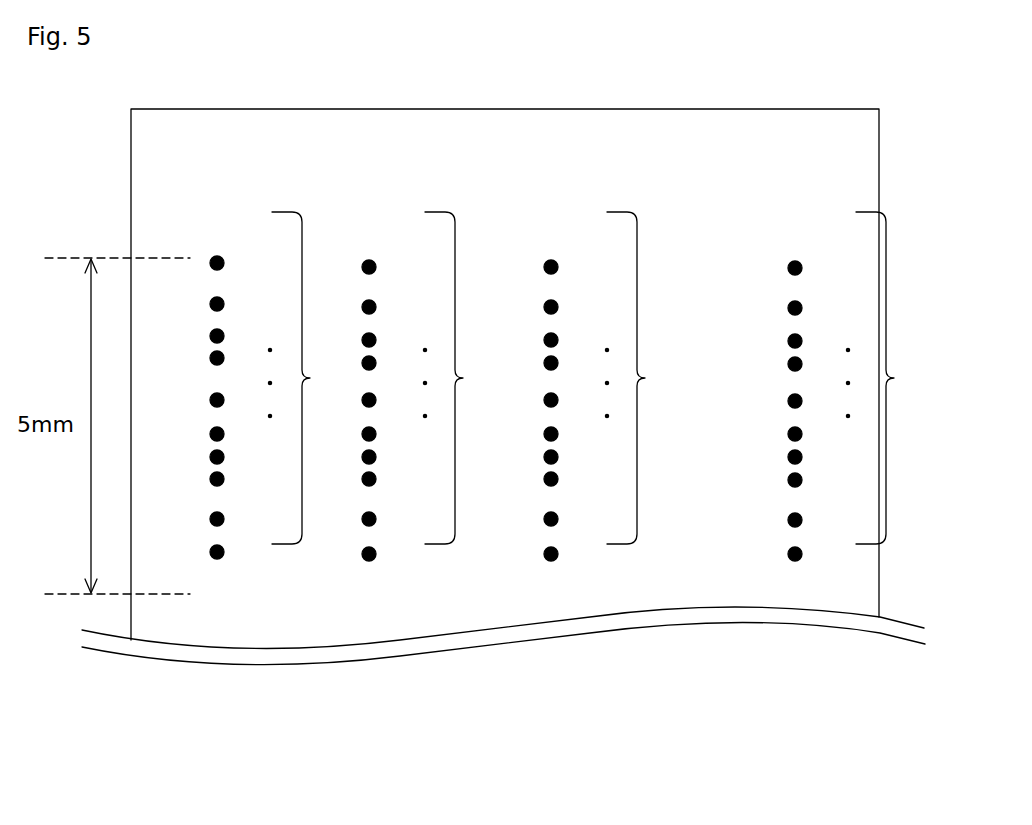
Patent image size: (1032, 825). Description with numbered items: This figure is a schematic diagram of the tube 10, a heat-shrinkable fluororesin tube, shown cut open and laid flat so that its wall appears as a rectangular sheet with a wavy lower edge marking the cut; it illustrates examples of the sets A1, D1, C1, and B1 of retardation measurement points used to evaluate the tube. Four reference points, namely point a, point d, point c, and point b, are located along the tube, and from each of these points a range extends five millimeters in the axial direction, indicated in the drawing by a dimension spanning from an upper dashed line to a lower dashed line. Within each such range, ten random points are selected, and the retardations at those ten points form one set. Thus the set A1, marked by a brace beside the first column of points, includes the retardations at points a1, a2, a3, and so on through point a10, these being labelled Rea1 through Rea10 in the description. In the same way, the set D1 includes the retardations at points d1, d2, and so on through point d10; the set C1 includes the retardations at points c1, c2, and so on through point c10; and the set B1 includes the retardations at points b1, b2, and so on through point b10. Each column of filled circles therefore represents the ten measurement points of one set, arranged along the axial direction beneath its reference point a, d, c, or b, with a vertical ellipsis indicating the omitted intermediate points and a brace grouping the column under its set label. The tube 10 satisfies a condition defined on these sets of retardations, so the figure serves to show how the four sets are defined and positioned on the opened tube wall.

The tube 10 is at (379, 706).
The set A1 is at (278, 385).
The set D1 is at (431, 386).
The set C1 is at (614, 386).
The set B1 is at (860, 386).
The point a is at (252, 391).
The point a1 is at (224, 263).
The point a2 is at (224, 304).
The point a3 is at (224, 336).
The point a10 is at (224, 552).
The point d is at (405, 392).
The point d1 is at (376, 267).
The point d2 is at (376, 307).
The point d10 is at (376, 554).
The point c is at (586, 392).
The point c1 is at (558, 267).
The point c2 is at (558, 307).
The point c10 is at (558, 554).
The point b is at (830, 392).
The point b1 is at (802, 268).
The point b2 is at (802, 308).
The point b10 is at (802, 554).